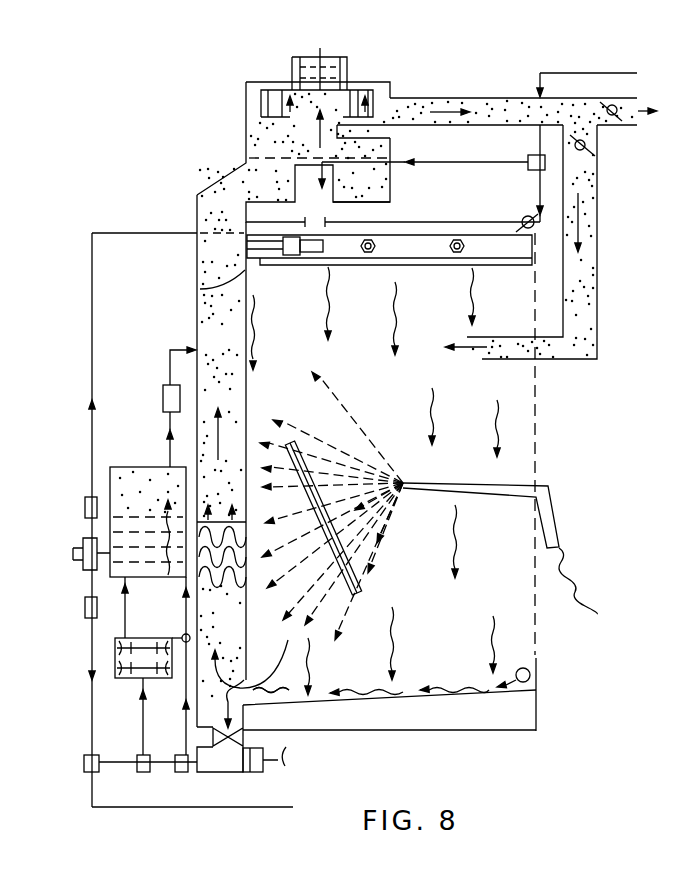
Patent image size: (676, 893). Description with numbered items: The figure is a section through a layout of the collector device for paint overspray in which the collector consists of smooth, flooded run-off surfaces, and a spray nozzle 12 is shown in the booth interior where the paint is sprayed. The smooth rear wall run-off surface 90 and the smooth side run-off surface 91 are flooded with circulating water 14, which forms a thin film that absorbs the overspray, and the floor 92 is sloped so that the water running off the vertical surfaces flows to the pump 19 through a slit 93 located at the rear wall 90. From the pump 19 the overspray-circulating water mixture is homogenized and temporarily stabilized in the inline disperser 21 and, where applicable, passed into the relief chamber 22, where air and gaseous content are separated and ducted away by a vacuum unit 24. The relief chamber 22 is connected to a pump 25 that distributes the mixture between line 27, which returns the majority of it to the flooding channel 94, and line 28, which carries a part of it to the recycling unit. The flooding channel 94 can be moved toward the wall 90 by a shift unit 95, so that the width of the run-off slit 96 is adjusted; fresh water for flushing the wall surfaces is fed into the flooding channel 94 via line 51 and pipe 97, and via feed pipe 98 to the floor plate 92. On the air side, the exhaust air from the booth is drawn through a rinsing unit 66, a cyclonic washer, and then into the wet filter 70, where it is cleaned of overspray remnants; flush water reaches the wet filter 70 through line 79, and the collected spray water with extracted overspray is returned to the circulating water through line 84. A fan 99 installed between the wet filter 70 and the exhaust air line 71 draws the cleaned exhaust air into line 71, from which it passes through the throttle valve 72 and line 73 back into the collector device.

The spray nozzle 12 is at (549, 487).
The circulating water 14 is at (401, 318).
The pump 19 is at (233, 773).
The inline disperser 21 is at (133, 638).
The relief chamber 22 is at (139, 466).
The vacuum unit 24 is at (164, 388).
The pump 25 is at (75, 546).
The line 27 is at (128, 232).
The line 28 is at (126, 808).
The line 51 is at (616, 72).
The rinsing unit 66 is at (241, 532).
The wet filter 70 is at (232, 162).
The line 71 is at (396, 97).
The throttle valve 72 is at (588, 149).
The line 73 is at (598, 284).
The spray device 79 is at (455, 161).
The line 84 is at (335, 213).
The rear wall run-off surface 90 is at (247, 392).
The side run-off surface 91 is at (521, 431).
The floor 92 is at (462, 718).
The slit 93 is at (253, 690).
The flooding channel 94 is at (316, 268).
The shift unit 95 is at (297, 259).
The run-off slit 96 is at (200, 289).
The pipe 97 is at (523, 217).
The feed pipe 98 is at (541, 676).
The fan 99 is at (260, 104).